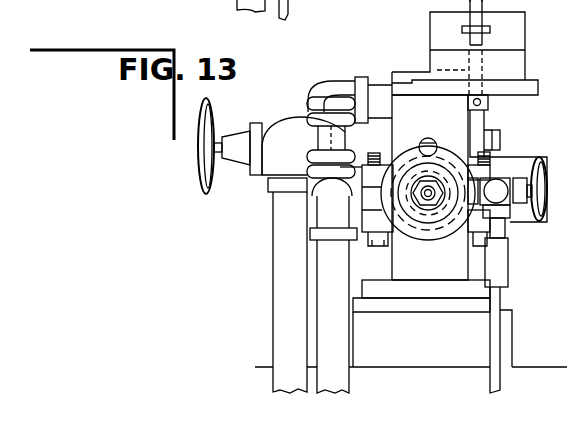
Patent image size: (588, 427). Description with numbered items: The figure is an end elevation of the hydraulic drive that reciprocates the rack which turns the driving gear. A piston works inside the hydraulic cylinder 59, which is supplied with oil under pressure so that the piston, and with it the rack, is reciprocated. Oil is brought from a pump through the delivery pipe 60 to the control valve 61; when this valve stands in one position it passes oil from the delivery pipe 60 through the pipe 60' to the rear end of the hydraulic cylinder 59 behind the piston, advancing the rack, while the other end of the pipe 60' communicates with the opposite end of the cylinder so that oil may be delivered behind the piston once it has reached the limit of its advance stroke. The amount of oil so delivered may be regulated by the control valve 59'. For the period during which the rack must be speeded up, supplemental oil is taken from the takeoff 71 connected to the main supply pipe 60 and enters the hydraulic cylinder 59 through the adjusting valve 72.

The hydraulic cylinder 59 is at (428, 213).
The control valve 59' is at (436, 225).
The delivery pipe 60 is at (305, 235).
The pipe 60' is at (437, 124).
The control valve 61 is at (430, 142).
The takeoff 71 is at (6, 366).
The adjusting valve 72 is at (507, 200).